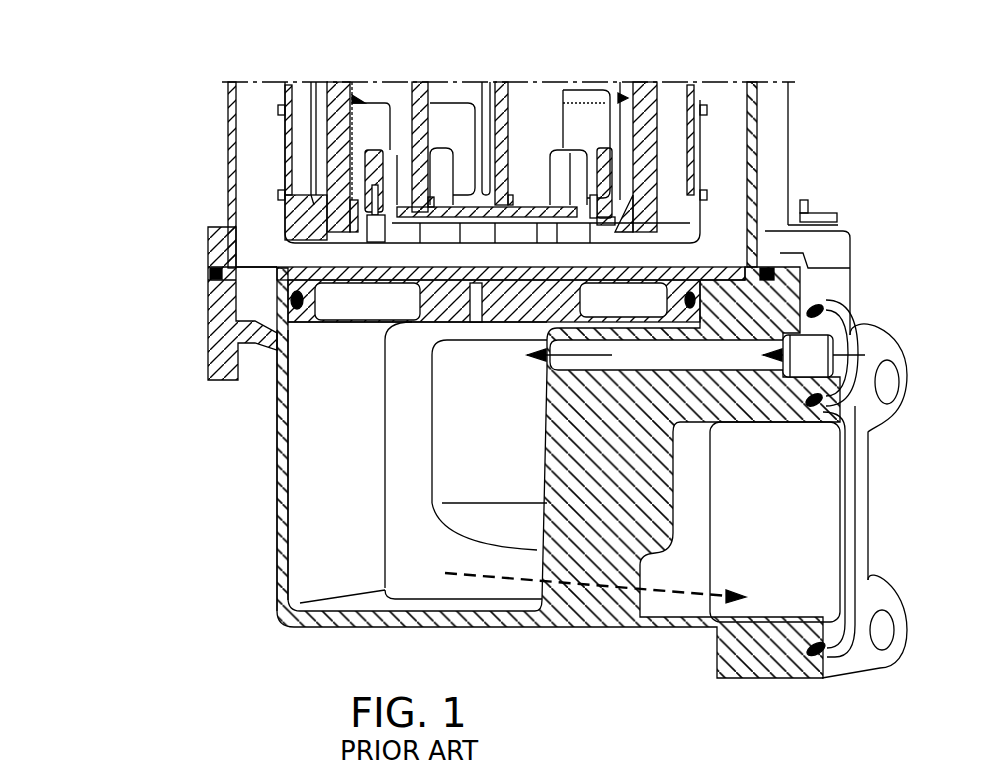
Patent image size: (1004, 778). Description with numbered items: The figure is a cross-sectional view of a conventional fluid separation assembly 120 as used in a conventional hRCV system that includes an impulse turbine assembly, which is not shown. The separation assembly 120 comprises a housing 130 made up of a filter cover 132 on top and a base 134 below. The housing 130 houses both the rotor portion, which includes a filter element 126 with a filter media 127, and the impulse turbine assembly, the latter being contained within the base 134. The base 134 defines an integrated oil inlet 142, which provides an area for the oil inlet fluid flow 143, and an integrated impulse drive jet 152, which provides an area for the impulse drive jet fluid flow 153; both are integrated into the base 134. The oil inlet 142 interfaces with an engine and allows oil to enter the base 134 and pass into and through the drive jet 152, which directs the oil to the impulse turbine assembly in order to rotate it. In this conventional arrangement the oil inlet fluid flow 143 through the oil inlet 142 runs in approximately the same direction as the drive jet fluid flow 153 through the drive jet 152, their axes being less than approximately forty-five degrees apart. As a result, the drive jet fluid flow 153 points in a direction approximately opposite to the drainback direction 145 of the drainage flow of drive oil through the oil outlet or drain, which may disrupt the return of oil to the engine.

The fluid separation assembly 120 is at (148, 258).
The filter element 126 is at (283, 141).
The filter media 127 is at (316, 150).
The housing 130 is at (273, 462).
The filter cover 132 is at (227, 160).
The base 134 is at (275, 514).
The oil inlet 142 is at (838, 368).
The oil inlet fluid flow 143 is at (813, 343).
The drainback direction 145 is at (675, 590).
The impulse drive jet 152 is at (733, 372).
The impulse drive jet fluid flow 153 is at (578, 362).